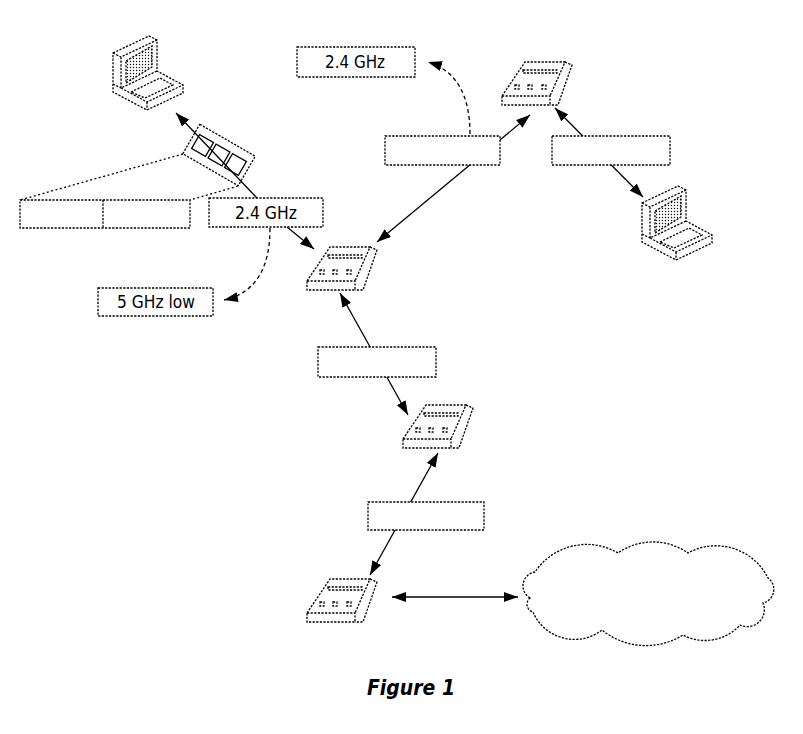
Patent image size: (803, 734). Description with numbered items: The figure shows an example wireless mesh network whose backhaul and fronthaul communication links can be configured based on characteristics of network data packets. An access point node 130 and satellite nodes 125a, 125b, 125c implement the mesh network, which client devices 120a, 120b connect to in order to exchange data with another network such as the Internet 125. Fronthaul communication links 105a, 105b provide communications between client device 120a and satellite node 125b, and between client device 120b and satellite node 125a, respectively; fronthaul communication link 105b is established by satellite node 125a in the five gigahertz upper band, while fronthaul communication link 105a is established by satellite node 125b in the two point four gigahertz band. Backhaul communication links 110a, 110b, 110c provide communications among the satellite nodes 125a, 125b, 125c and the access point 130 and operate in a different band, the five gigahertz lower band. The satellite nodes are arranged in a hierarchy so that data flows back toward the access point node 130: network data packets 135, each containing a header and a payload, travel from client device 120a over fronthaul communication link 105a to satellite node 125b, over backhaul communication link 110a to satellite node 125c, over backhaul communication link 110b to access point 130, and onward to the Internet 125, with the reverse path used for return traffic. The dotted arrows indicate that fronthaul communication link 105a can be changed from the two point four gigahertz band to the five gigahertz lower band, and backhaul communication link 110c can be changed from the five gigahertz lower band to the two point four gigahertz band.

The client device 120a is at (145, 36).
The client device 120b is at (678, 185).
The fronthaul communication link 105a is at (190, 122).
The fronthaul communication link 105b is at (618, 180).
The network data packets 135 is at (187, 152).
The satellite node 125a is at (523, 62).
The satellite node 125b is at (333, 247).
The satellite node 125c is at (453, 404).
The access point node 130 is at (325, 577).
The backhaul communication link 110a is at (357, 330).
The backhaul communication link 110b is at (420, 482).
The backhaul communication link 110c is at (453, 182).
The Internet 125 is at (668, 605).